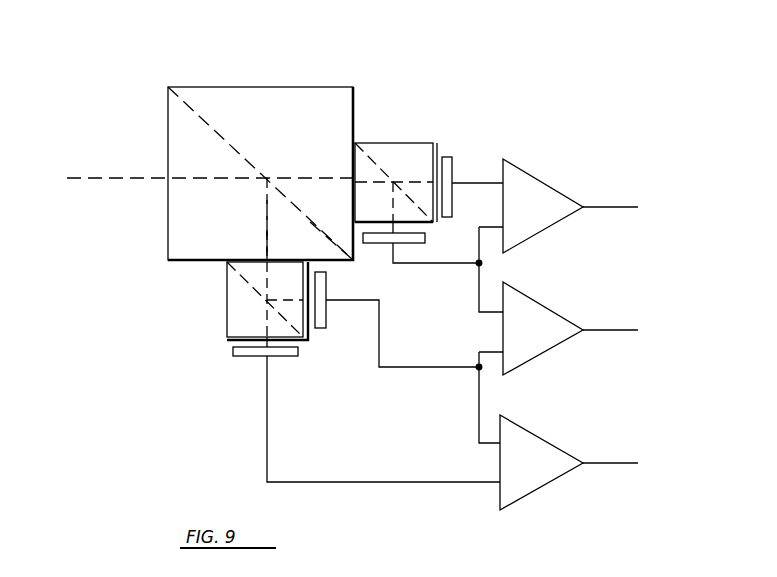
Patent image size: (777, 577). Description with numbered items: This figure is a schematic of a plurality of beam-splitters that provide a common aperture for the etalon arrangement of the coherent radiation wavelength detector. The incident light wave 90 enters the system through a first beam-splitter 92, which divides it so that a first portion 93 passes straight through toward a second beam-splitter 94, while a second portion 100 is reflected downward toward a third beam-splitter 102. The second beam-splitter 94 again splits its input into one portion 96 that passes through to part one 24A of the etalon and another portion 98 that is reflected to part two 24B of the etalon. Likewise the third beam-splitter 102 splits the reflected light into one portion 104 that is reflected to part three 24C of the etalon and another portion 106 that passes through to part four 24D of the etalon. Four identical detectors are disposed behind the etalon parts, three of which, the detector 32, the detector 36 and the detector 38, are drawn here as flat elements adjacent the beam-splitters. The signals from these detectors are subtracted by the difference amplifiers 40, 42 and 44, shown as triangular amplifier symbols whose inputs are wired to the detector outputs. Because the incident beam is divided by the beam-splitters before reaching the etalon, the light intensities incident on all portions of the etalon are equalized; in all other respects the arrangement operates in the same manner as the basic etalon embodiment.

The incident light wave 90 is at (82, 178).
The first beam-splitter 92 is at (253, 87).
The first portion 93 is at (305, 178).
The second portion 100 is at (267, 232).
The part two of the etalon 24B is at (353, 225).
The part three of the etalon 24C is at (312, 262).
The second beam-splitter 94 is at (390, 143).
The one portion 96 is at (407, 182).
The another portion 98 is at (393, 212).
The part one of the etalon 24A is at (437, 143).
The detector 32 is at (452, 157).
The third beam-splitter 102 is at (227, 296).
The one portion 104 is at (283, 300).
The another portion 106 is at (267, 324).
The detector 36 is at (327, 318).
The detector 38 is at (255, 357).
The part four of the etalon 24D is at (230, 337).
The difference amplifier 40 is at (545, 184).
The difference amplifier 42 is at (548, 308).
The difference amplifier 44 is at (545, 439).